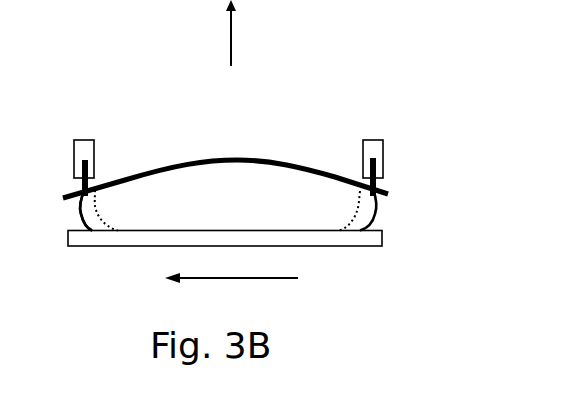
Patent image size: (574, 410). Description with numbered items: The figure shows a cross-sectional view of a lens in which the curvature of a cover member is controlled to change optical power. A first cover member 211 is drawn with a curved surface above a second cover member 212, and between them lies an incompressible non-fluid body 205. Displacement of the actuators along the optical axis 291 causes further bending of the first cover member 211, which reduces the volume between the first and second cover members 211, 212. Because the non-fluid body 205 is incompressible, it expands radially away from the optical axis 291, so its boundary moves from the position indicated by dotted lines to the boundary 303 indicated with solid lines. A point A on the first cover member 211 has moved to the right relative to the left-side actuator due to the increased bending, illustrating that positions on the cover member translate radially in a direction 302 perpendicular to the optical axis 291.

The optical axis 291 is at (206, 33).
The direction 302 is at (231, 291).
The second cover member 212 is at (318, 239).
The first cover member 211 is at (262, 160).
The non-fluid body 205 is at (138, 192).
The boundary 303 is at (83, 217).
The point A is at (110, 183).